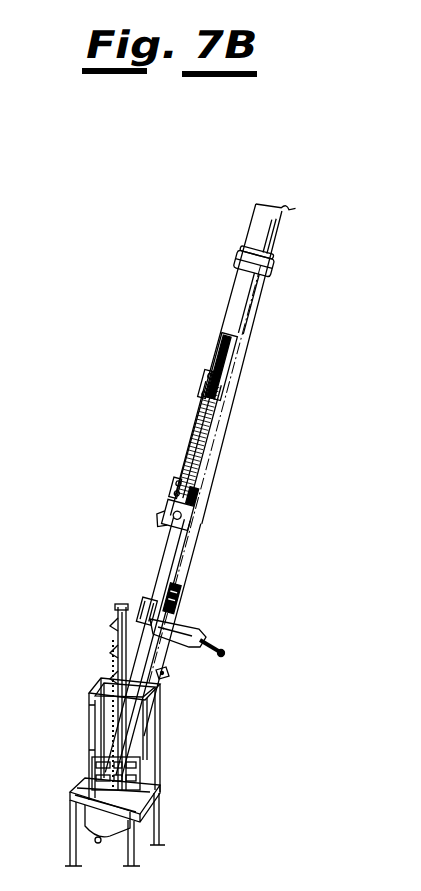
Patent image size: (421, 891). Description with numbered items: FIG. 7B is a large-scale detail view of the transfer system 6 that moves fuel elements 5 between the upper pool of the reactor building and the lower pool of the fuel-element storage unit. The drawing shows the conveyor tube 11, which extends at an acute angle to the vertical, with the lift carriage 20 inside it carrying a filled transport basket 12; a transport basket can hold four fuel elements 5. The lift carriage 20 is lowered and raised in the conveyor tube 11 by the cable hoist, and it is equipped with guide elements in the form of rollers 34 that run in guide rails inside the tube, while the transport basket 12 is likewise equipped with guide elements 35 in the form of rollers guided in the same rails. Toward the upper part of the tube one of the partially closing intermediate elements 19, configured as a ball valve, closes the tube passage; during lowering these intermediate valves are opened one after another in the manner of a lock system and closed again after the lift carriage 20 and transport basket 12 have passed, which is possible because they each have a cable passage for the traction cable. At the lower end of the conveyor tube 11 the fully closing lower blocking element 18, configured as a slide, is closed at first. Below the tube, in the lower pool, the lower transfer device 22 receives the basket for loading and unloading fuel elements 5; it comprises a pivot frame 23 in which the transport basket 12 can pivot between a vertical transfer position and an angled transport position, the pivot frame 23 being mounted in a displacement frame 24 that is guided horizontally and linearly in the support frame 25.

The transfer system 6 is at (265, 193).
The intermediate element 19 is at (236, 257).
The conveyor tube 11 is at (257, 312).
The fuel element 5 is at (236, 351).
The guide elements 35 is at (205, 398).
The transport basket 12 is at (224, 437).
The lift carriage 20 is at (204, 519).
The rollers 34 is at (175, 528).
The lower blocking element 18 is at (189, 612).
The pivot frame 23 is at (166, 674).
The displacement frame 24 is at (87, 745).
The lower transfer device 22 is at (162, 737).
The support frame 25 is at (164, 786).